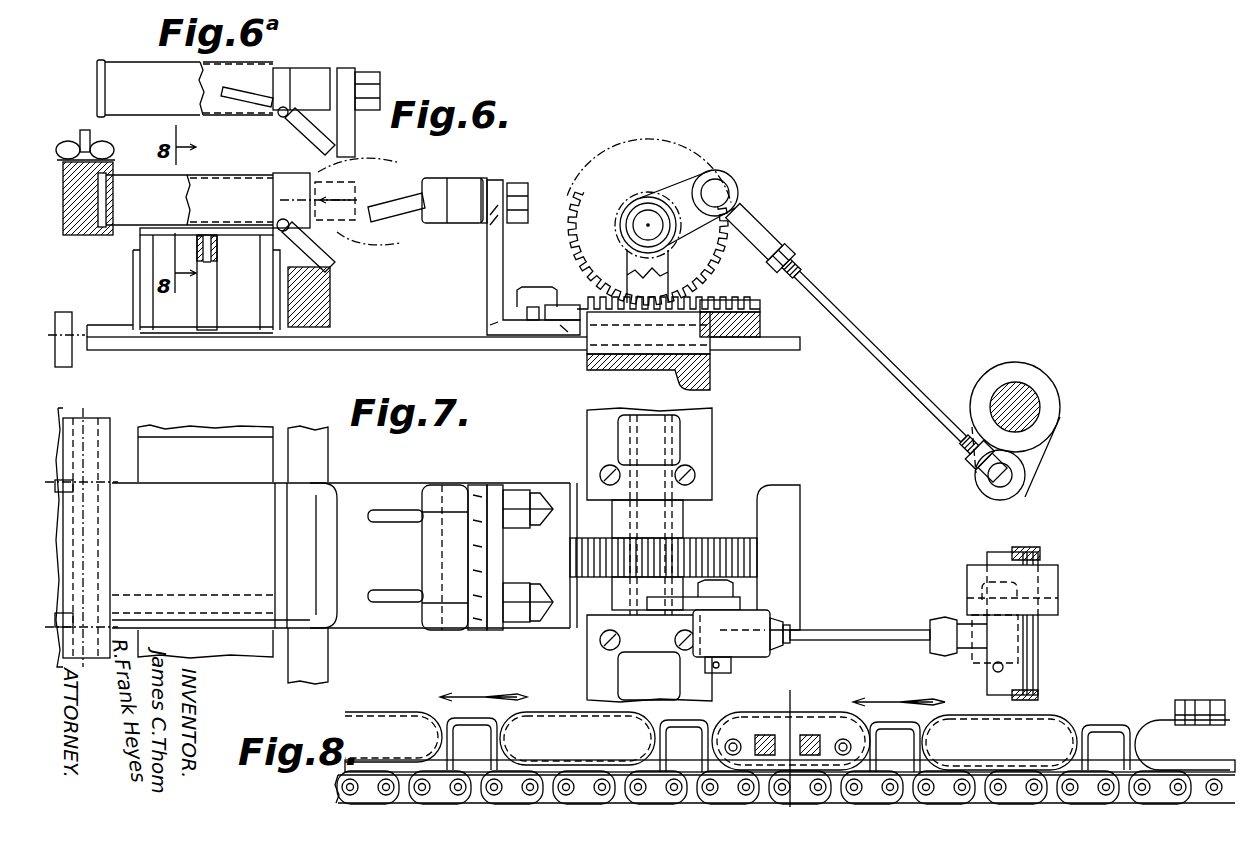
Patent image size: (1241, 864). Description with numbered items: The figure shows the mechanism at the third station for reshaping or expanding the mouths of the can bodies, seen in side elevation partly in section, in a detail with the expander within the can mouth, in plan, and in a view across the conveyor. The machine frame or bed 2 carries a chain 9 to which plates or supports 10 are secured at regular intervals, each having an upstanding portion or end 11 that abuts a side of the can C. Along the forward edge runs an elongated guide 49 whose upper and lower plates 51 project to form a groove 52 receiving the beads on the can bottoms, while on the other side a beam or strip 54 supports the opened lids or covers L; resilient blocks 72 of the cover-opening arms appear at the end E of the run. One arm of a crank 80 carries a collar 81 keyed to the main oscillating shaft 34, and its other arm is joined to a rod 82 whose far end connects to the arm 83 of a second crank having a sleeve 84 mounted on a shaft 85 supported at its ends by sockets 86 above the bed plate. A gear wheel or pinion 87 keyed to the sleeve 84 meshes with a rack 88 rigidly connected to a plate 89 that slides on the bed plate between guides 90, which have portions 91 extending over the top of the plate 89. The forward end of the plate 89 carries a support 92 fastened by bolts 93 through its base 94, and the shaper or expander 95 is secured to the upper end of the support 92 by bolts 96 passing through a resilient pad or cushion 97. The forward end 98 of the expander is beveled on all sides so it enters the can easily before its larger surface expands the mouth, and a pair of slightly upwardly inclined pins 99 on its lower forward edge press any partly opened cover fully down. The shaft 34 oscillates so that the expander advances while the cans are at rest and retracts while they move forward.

In FIG. 6, the frame or bed 2 is at (587, 371).
In FIG. 7, the frame or bed 2 is at (712, 412).
In FIG. 6, the chain 9 is at (218, 262).
In FIG. 8, the chain 9 is at (336, 789).
In FIG. 6, the plates or supports 10 is at (143, 228).
In FIG. 7, the plates or supports 10 is at (238, 633).
In FIG. 8, the plates or supports 10 is at (585, 768).
In FIG. 7, the upstanding portion or end 11 is at (196, 447).
In FIG. 8, the upstanding portion or end 11 is at (685, 732).
In FIG. 6, the main oscillating shaft 34 is at (1017, 384).
In FIG. 7, the main oscillating shaft 34 is at (1040, 556).
In FIG. 6, the elongated guide 49 is at (73, 250).
In FIG. 7, the elongated guide 49 is at (155, 401).
In FIG. 6, the upper and lower plates 51 is at (108, 160).
In FIG. 6, the groove 52 is at (100, 237).
In FIG. 6, the beam or strip 54 is at (330, 300).
In FIG. 7, the beam or strip 54 is at (288, 668).
In FIG. 8, the resilient blocks 72 is at (1210, 695).
In FIG. 6, the crank 80 is at (1030, 460).
In FIG. 7, the crank 80 is at (1030, 603).
In FIG. 6, the collar 81 is at (1060, 393).
In FIG. 7, the collar 81 is at (1058, 590).
In FIG. 6, the rod 82 is at (904, 372).
In FIG. 7, the rod 82 is at (850, 632).
In FIG. 6, the arm 83 is at (758, 216).
In FIG. 7, the arm 83 is at (747, 625).
In FIG. 6, the sleeve 84 is at (648, 199).
In FIG. 7, the sleeve 84 is at (680, 455).
In FIG. 6, the shaft 85 is at (640, 228).
In FIG. 7, the shaft 85 is at (665, 522).
In FIG. 6, the sockets 86 is at (622, 217).
In FIG. 7, the sockets 86 is at (675, 440).
In FIG. 6, the gear wheel or pinion 87 is at (714, 270).
In FIG. 7, the gear wheel or pinion 87 is at (725, 538).
In FIG. 6, the rack 88 is at (748, 300).
In FIG. 7, the rack 88 is at (760, 557).
In FIG. 6, the plate 89 is at (760, 326).
In FIG. 7, the plate 89 is at (800, 527).
In FIG. 6, the guides 90 is at (724, 350).
In FIG. 7, the guides 90 is at (724, 482).
In FIG. 6, the portions 91 is at (72, 318).
In FIG. 7, the portions 91 is at (66, 418).
In FIG. 6, the support 92 is at (487, 275).
In FIG. 7, the support 92 is at (493, 632).
In FIG. 6, the bolts 93 is at (530, 287).
In FIG. 7, the bolts 93 is at (541, 586).
In FIG. 6, the base 94 is at (565, 305).
In FIG. 7, the base 94 is at (545, 496).
In FIG. 6, the shaper or expander 95 is at (517, 176).
In FIG. 7, the shaper or expander 95 is at (491, 476).
In FIG. 8, the shaper or expander 95 is at (807, 717).
In FIG. 6, the bolts 96 is at (522, 184).
In FIG. 7, the bolts 96 is at (515, 490).
In FIG. 6, the resilient pad or cushion 97 is at (484, 180).
In FIG. 7, the resilient pad or cushion 97 is at (479, 490).
In FIG. 6, the forward end 98 is at (433, 174).
In FIG. 7, the forward end 98 is at (430, 490).
In FIG. 8, the forward end 98 is at (752, 700).
In FIG. 6a, the pins 99 is at (237, 104).
In FIG. 6, the pins 99 is at (405, 221).
In FIG. 7, the pins 99 is at (392, 589).
In FIG. 8, the pins 99 is at (835, 748).
In FIG. 6, the carrier C is at (229, 200).
In FIG. 7, the carrier C is at (203, 523).
In FIG. 8, the carrier C is at (1066, 718).
In FIG. 6, the lids or covers L is at (335, 262).
In FIG. 7, the lids or covers L is at (338, 570).
In FIG. 8, the lids or covers L is at (515, 805).
In FIG. 8, the end E is at (603, 762).